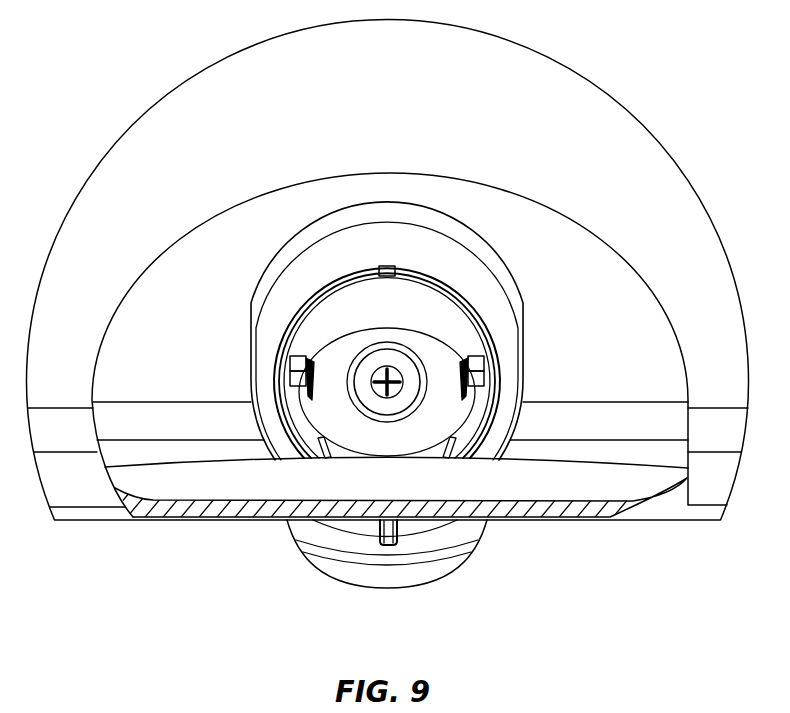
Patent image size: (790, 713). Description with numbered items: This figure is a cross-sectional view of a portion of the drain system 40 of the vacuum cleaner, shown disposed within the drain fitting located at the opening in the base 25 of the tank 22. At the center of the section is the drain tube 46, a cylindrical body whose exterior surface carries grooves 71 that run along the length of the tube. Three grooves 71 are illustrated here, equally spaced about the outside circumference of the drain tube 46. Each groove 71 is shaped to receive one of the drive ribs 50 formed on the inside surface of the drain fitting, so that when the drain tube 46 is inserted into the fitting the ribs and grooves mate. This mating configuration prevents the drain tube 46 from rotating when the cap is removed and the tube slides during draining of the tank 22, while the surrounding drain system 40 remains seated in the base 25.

The tank 22 is at (619, 64).
The base 25 is at (615, 133).
The drain system 40 is at (230, 596).
The drain tube 46 is at (470, 430).
The drive rib 50 is at (291, 362).
The groove 71 is at (389, 266).